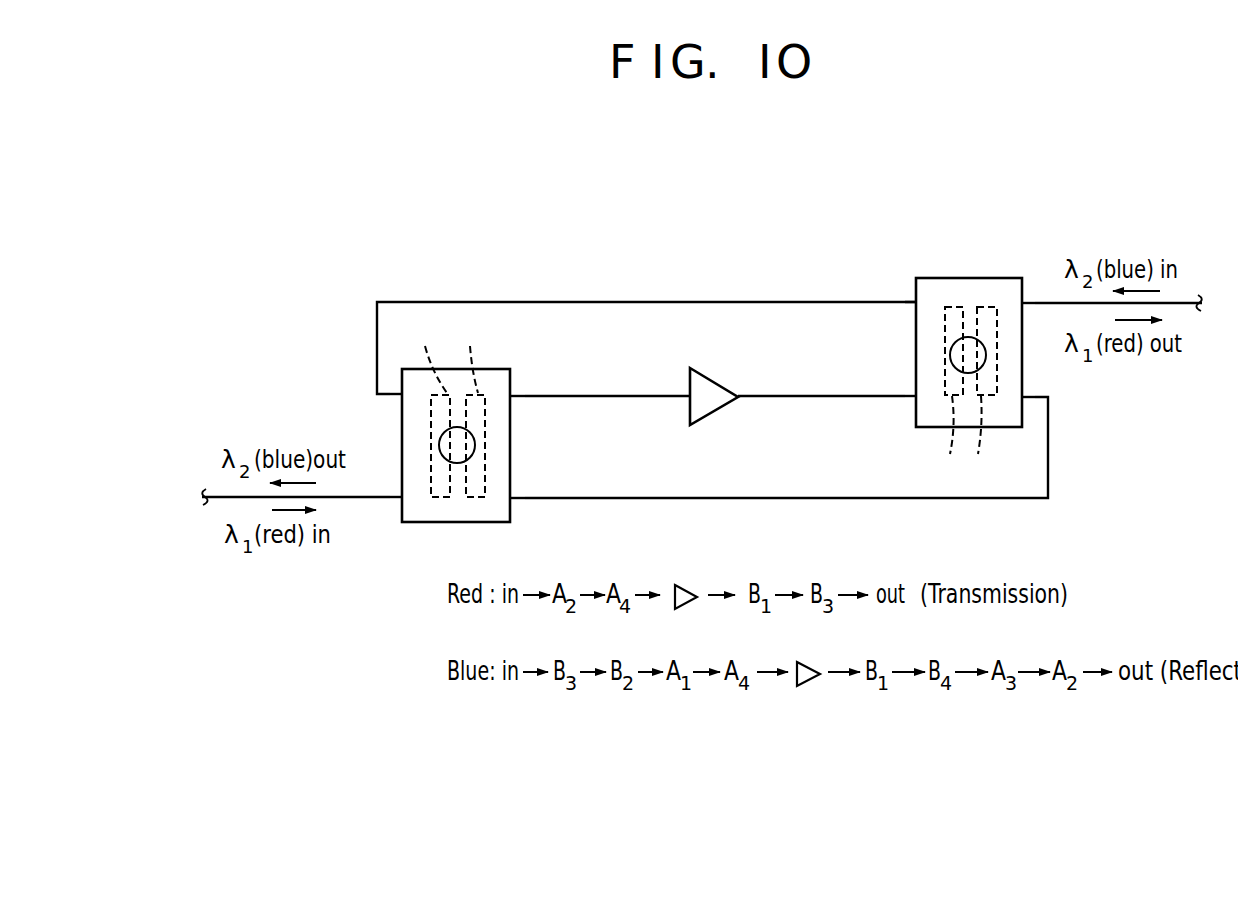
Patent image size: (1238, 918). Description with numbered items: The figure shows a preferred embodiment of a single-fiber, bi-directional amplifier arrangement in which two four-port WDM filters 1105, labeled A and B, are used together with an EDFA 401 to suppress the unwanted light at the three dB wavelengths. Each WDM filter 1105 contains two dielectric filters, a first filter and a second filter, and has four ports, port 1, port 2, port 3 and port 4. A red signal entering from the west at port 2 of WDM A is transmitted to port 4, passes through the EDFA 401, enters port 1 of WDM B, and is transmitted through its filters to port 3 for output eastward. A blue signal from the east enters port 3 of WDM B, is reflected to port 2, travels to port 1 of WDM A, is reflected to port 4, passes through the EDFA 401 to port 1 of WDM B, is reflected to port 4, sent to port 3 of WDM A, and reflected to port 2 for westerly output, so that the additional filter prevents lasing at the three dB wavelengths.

The four-port WDM filter 1105 is at (712, 400).
The EDFA 401 is at (718, 413).
The WDM port 1 is at (714, 449).
The WDM port 2 is at (712, 449).
The WDM port 3 is at (712, 351).
The WDM port 4 is at (713, 351).